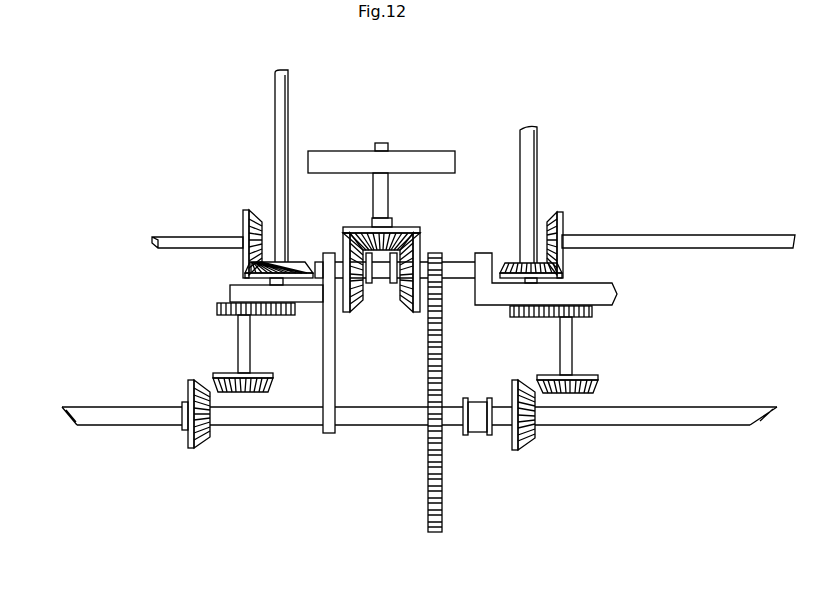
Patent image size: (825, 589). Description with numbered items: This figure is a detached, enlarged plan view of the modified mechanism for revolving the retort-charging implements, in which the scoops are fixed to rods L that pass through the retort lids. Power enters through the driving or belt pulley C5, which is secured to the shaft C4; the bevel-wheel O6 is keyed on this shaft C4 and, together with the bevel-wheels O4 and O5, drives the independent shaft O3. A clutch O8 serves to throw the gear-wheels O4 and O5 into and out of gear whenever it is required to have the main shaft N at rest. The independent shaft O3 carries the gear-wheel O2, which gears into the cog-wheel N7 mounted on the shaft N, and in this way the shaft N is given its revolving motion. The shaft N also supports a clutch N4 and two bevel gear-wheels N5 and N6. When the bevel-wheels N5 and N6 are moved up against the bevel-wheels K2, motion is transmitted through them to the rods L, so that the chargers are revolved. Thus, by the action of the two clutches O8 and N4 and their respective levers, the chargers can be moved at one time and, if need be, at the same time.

The driving or belt pulley C5 is at (381, 158).
The shaft C4 is at (388, 207).
The bevel-wheel O6 is at (402, 238).
The clutch O8 is at (422, 250).
The gear-wheel O2 is at (442, 386).
The independent shaft O3 is at (454, 288).
The bevel-wheel O4 is at (347, 298).
The bevel-wheel O5 is at (413, 292).
The rod L is at (546, 206).
The bevel-wheel K2 is at (609, 382).
The cog-wheel N7 is at (443, 369).
The clutch N4 is at (482, 393).
The shaft N is at (419, 416).
The bevel gear-wheel N5 is at (207, 440).
The bevel gear-wheel N6 is at (528, 445).